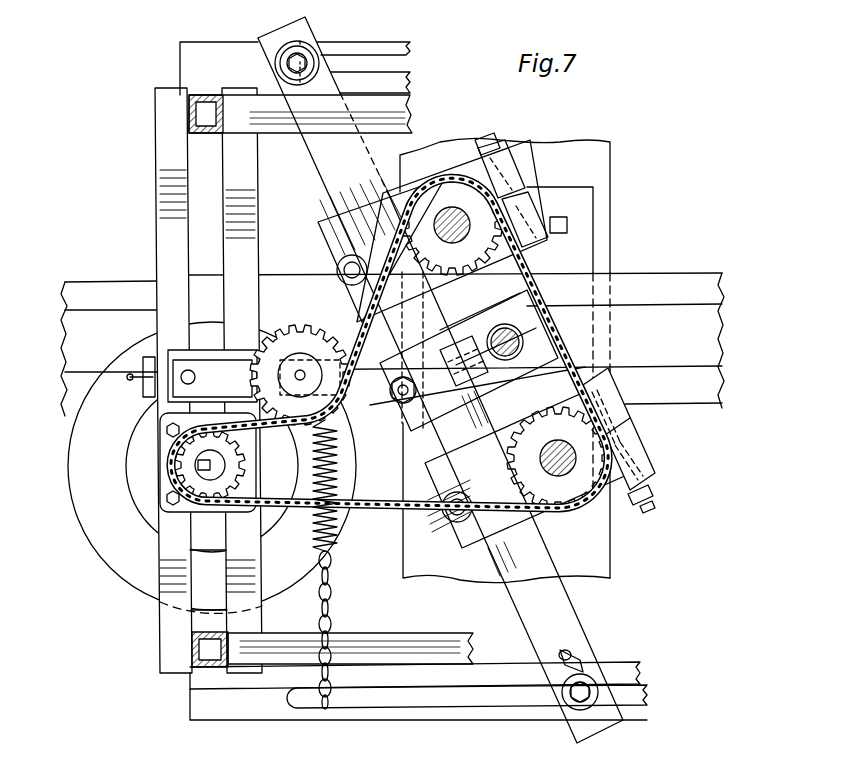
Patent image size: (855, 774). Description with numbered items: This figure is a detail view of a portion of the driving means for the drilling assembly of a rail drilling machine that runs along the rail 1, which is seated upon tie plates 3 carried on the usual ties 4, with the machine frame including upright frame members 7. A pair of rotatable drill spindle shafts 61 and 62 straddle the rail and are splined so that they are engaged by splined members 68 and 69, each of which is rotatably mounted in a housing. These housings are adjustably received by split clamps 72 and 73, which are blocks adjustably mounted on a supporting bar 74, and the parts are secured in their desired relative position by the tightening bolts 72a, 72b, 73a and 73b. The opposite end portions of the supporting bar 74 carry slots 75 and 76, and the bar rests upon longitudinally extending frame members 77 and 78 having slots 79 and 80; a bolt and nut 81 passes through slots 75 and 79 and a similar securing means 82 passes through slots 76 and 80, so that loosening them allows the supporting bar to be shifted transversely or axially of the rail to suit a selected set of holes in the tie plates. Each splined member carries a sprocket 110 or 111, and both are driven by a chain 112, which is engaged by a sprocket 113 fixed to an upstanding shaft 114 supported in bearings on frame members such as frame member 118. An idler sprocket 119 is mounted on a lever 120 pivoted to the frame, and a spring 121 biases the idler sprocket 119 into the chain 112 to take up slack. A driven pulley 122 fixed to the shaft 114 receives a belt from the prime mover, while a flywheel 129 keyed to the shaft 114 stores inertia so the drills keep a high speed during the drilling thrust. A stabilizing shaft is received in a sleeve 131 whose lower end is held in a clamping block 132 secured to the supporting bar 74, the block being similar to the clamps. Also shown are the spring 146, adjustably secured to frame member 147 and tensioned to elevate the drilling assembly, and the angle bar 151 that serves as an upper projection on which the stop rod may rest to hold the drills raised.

The rail 1 is at (660, 312).
The tie plate 3 is at (595, 203).
The tie 4 is at (598, 160).
The upright frame member 7 is at (190, 112).
The drill spindle shaft 61 is at (568, 444).
The drill spindle shaft 62 is at (452, 225).
The splined member 68 is at (530, 480).
The splined member 69 is at (450, 206).
The split clamp 72 is at (645, 452).
The tightening bolt 72a is at (456, 522).
The tightening bolt 72b is at (662, 492).
The split clamp 73 is at (513, 163).
The tightening bolt 73a is at (345, 262).
The tightening bolt 73b is at (493, 133).
The supporting bar 74 is at (334, 180).
The slot 75 is at (288, 50).
The slot 76 is at (578, 658).
The frame member 77 is at (408, 84).
The frame member 78 is at (485, 665).
The slot 79 is at (378, 55).
The slot 80 is at (462, 706).
The bolt and nut 81 is at (302, 58).
The securing means 82 is at (572, 708).
The sprocket 110 is at (585, 498).
The sprocket 111 is at (452, 188).
The chain 112 is at (384, 510).
The sprocket 113 is at (185, 472).
The shaft 114 is at (200, 460).
The frame member 118 is at (410, 118).
The idler sprocket 119 is at (298, 326).
The lever 120 is at (190, 366).
The spring 121 is at (341, 540).
The driven pulley 122 is at (100, 560).
The flywheel 129 is at (123, 573).
The sleeve 131 is at (477, 360).
The clamping block 132 is at (505, 324).
The spring 146 is at (143, 378).
The frame member 147 is at (153, 390).
The angle bar 151 is at (403, 404).